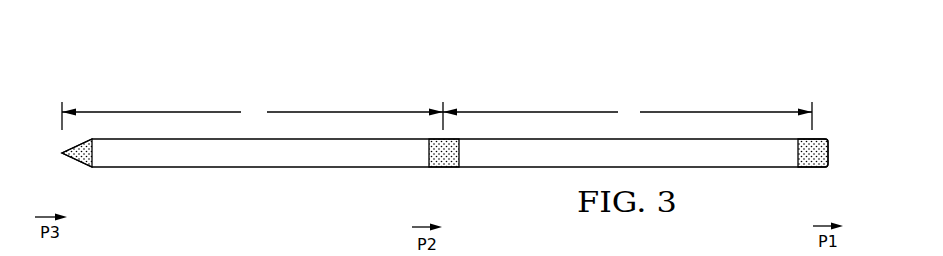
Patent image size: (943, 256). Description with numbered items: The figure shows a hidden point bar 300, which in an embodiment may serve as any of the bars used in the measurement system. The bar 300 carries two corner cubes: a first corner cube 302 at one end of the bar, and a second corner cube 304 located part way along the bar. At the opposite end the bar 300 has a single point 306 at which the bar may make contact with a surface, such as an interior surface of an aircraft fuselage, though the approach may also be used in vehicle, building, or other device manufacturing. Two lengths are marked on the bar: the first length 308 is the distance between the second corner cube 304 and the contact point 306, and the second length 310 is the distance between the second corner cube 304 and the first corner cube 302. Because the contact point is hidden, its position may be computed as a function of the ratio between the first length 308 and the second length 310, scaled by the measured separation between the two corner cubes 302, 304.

The hidden point bar 300 is at (332, 78).
The corner cube 302 is at (817, 168).
The corner cube 304 is at (440, 168).
The point 306 is at (63, 162).
The length 308 is at (183, 112).
The length 310 is at (705, 112).